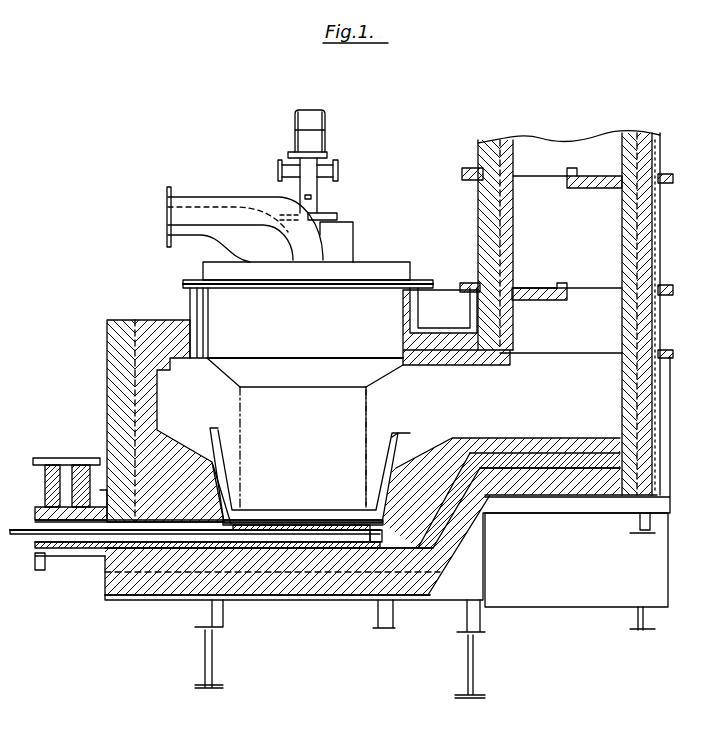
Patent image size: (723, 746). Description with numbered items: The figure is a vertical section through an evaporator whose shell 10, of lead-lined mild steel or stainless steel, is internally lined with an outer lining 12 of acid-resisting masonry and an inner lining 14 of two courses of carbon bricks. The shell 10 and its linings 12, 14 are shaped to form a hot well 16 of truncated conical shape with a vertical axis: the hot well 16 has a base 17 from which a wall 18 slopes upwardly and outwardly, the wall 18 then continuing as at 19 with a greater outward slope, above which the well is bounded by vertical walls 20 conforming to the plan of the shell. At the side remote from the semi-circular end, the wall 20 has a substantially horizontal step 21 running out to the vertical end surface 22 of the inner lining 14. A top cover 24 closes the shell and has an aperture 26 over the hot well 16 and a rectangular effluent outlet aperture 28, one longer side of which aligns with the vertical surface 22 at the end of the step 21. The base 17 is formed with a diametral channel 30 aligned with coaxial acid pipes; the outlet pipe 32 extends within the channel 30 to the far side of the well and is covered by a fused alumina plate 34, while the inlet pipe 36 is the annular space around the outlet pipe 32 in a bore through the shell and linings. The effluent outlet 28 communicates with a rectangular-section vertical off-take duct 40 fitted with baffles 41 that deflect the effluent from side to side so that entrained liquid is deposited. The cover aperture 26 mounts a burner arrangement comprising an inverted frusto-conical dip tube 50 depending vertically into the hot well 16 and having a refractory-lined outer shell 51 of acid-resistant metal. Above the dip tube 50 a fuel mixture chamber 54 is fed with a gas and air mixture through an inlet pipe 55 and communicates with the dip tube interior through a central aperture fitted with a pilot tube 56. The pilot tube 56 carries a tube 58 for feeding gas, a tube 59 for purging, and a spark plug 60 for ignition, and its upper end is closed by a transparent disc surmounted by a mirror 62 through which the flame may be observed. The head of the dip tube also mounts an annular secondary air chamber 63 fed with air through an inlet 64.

The shell 10 is at (106, 413).
The outer lining 12 is at (108, 362).
The inner lining 14 is at (140, 388).
The hot well 16 is at (222, 408).
The base 17 is at (230, 557).
The wall 18 is at (220, 490).
The wall continuation 19 is at (193, 450).
The vertical walls 20 is at (167, 370).
The horizontal step 21 is at (543, 437).
The vertical end surface 22 is at (620, 373).
The top cover 24 is at (447, 328).
The aperture 26 is at (412, 287).
The effluent outlet aperture 28 is at (587, 288).
The diametral channel 30 is at (370, 540).
The outlet pipe 32 is at (75, 533).
The fused alumina plate 34 is at (268, 572).
The inlet pipe 36 is at (90, 545).
The off-take duct 40 is at (488, 219).
The baffles 41 is at (590, 175).
The dip tube 50 is at (313, 430).
The outer shell 51 is at (372, 392).
The fuel mixture chamber 54 is at (343, 243).
The inlet pipe 55 is at (188, 236).
The pilot tube 56 is at (317, 198).
The tube 58 is at (288, 167).
The tube 59 is at (328, 168).
The spark plug 60 is at (308, 197).
The mirror 62 is at (315, 120).
The annular secondary air chamber 63 is at (382, 270).
The inlet 64 is at (232, 205).